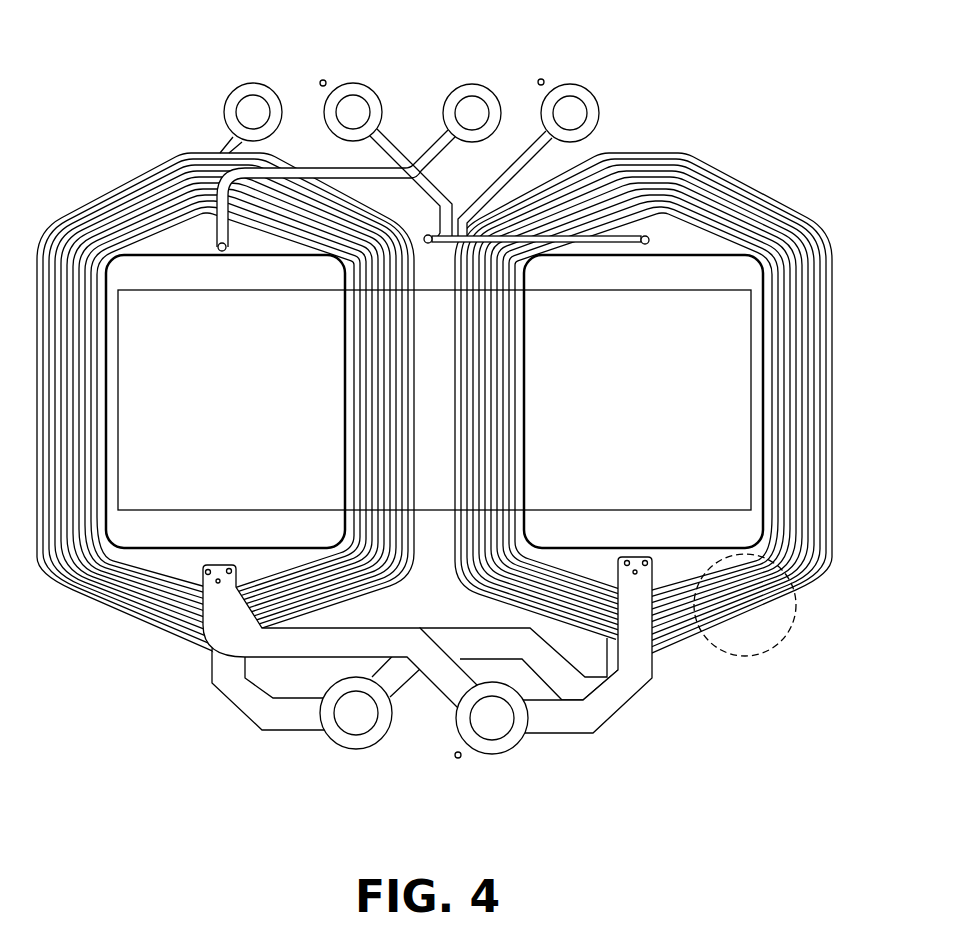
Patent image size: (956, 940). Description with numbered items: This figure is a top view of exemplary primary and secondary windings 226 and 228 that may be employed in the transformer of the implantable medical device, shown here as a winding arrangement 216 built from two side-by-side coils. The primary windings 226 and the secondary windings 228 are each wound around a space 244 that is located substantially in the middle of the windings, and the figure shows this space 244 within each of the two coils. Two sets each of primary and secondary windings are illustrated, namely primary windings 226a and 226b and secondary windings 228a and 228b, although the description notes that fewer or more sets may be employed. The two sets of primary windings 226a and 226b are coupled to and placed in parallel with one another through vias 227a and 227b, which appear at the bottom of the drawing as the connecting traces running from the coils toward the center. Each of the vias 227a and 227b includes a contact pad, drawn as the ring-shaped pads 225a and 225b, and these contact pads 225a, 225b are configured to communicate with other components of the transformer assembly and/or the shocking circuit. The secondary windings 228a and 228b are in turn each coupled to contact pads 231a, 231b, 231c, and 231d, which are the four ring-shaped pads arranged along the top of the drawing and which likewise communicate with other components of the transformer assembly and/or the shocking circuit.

The coil 216 is at (434, 389).
The primary winding 226 is at (748, 198).
The secondary winding 228 is at (733, 190).
The primary winding 226a is at (118, 618).
The primary winding 226b is at (780, 628).
The secondary winding 228a is at (146, 566).
The secondary winding 228b is at (712, 662).
The via 227a is at (273, 730).
The via 227b is at (333, 668).
The contact pad 225a is at (357, 752).
The contact pad 225b is at (515, 748).
The contact pad 231a is at (268, 82).
The contact pad 231b is at (347, 82).
The contact pad 231c is at (470, 82).
The contact pad 231d is at (560, 82).
The space 244 is at (241, 404).